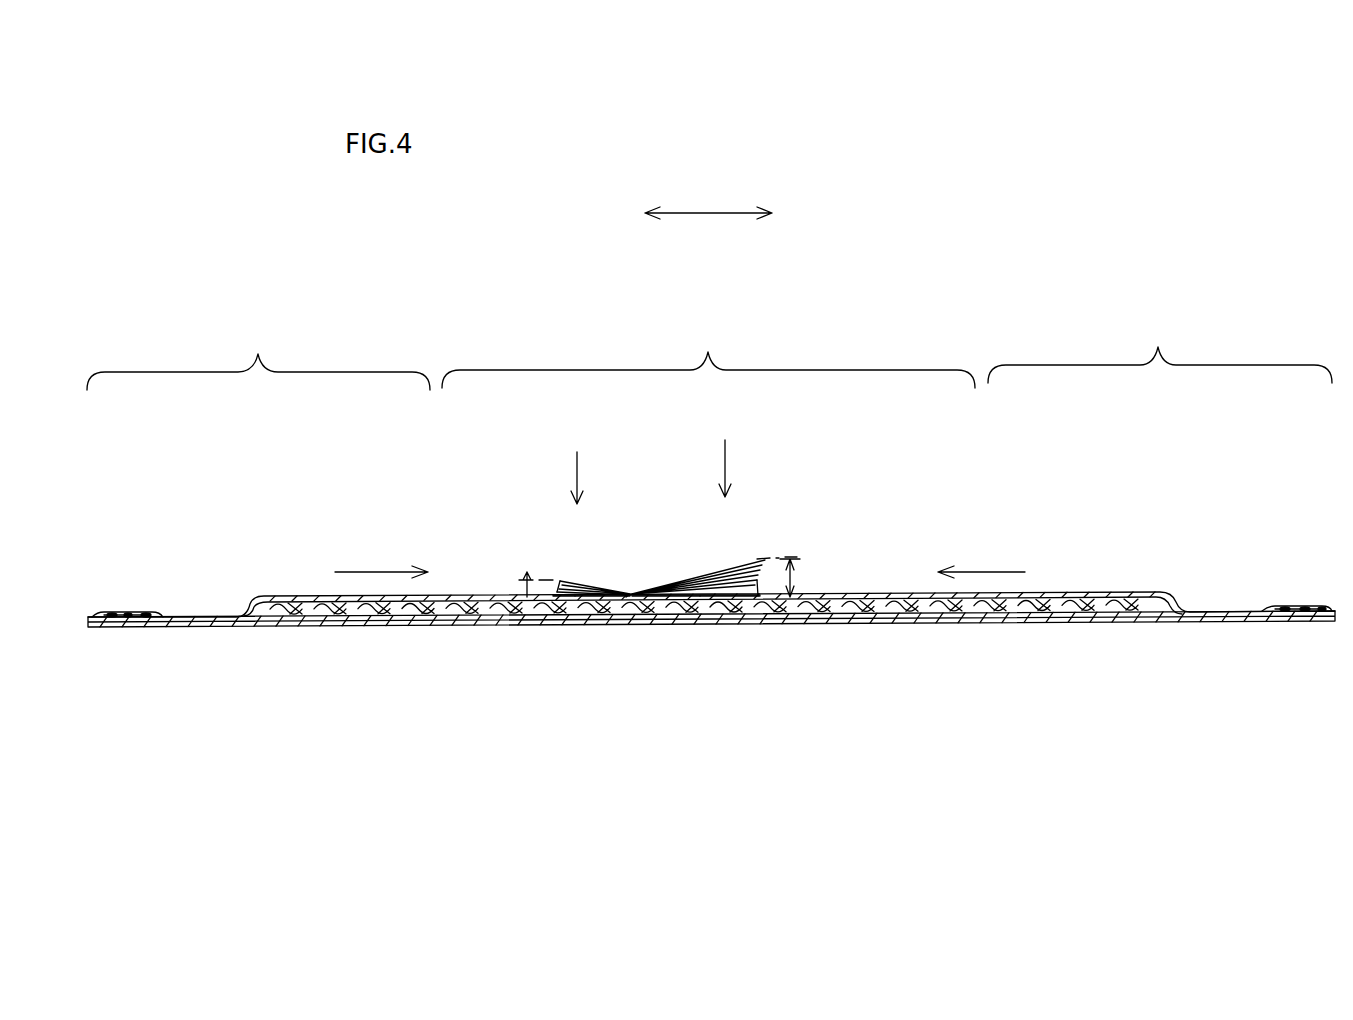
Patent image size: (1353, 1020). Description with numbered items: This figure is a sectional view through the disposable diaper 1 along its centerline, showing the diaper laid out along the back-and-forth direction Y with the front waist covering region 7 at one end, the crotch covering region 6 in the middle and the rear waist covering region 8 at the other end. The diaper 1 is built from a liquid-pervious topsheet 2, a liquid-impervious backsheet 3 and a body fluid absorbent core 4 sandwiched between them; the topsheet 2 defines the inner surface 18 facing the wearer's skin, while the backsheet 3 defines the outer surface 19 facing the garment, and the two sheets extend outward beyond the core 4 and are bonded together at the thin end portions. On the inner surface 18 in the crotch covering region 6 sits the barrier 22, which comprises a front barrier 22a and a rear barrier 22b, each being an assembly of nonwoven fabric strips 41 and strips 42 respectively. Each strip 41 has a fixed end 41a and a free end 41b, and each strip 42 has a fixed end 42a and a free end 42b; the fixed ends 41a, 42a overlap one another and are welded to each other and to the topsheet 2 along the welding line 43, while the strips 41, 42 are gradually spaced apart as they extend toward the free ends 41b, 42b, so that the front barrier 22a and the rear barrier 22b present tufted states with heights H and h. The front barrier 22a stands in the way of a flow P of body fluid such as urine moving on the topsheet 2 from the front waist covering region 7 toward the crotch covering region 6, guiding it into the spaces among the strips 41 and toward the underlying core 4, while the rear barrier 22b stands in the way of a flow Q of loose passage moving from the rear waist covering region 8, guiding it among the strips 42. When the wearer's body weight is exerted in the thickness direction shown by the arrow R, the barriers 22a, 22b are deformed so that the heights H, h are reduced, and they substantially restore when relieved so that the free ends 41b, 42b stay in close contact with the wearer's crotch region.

The disposable diaper 1 is at (1279, 272).
The liquid-pervious topsheet 2 is at (288, 595).
The liquid-impervious backsheet 3 is at (306, 628).
The body fluid absorbent core 4 is at (404, 610).
The crotch covering region 6 is at (708, 353).
The front waist covering region 7 is at (258, 354).
The rear waist covering region 8 is at (1160, 347).
The inner surface 18 is at (206, 615).
The outer surface 19 is at (190, 628).
The barrier 22 is at (651, 503).
The front barrier 22a is at (562, 578).
The rear barrier 22b is at (736, 551).
The strips of the front barrier 41 is at (592, 590).
The fixed end of strip 41a is at (598, 600).
The free end of strip 41b is at (543, 600).
The strips of the rear barrier 42 is at (698, 578).
The fixed end of strip 42a is at (655, 600).
The free end of strip 42b is at (762, 600).
The welding line 43 is at (632, 592).
The height of front barrier H is at (522, 590).
The height of rear barrier h is at (800, 576).
The flow of body fluid P is at (382, 572).
The flow of body fluid Q is at (988, 572).
The thickness direction arrow R is at (650, 458).
The back-and-forth direction Y is at (700, 213).